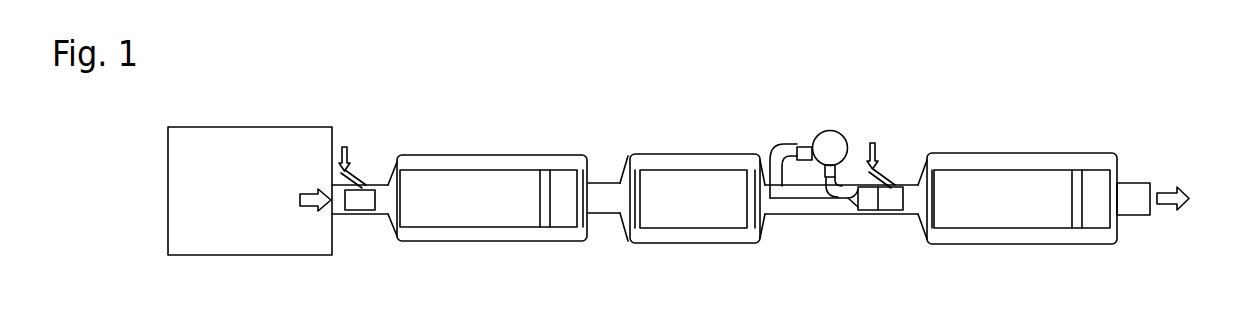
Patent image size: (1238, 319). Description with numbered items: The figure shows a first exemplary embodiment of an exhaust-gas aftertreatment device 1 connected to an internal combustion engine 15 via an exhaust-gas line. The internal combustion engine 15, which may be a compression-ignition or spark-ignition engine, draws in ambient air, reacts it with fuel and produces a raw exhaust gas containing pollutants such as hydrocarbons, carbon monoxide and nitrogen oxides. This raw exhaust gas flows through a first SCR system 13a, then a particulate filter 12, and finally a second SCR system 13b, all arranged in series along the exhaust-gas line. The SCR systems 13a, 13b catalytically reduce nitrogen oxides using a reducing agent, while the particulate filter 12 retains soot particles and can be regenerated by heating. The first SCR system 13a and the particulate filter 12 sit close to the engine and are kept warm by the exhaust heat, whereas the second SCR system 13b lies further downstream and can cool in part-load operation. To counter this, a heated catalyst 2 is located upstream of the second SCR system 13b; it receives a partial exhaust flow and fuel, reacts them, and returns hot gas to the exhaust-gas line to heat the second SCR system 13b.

The exhaust-gas aftertreatment device 1 is at (1103, 92).
The internal combustion engine 15 is at (261, 136).
The first SCR system 13a is at (485, 187).
The particulate filter 12 is at (692, 183).
The heated catalyst 2 is at (828, 142).
The second SCR system 13b is at (1013, 183).